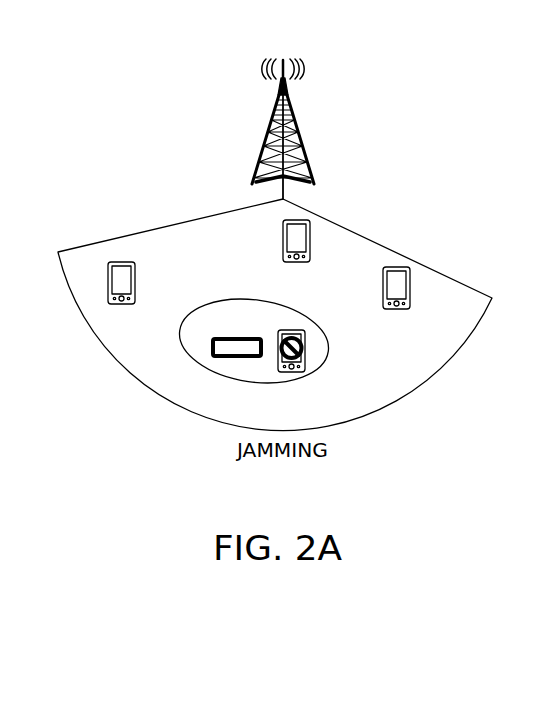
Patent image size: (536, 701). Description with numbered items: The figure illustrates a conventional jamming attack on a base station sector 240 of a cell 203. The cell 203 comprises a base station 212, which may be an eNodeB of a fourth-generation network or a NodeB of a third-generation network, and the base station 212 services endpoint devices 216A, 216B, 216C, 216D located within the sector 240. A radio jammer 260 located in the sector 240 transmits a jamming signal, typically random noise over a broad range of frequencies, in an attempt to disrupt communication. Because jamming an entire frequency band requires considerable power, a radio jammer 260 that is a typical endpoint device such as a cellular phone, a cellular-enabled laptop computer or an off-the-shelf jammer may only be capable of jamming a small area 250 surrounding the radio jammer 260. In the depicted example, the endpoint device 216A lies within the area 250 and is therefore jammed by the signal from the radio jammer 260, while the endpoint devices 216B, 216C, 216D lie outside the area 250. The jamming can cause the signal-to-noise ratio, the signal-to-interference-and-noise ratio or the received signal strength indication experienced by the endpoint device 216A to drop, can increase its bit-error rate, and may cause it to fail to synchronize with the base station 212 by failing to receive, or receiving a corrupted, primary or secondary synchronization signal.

The cell 203 is at (131, 114).
The base station 212 is at (292, 104).
The endpoint device 216A is at (293, 372).
The endpoint device 216B is at (121, 304).
The endpoint device 216C is at (296, 262).
The endpoint device 216D is at (396, 309).
The base station sector 240 is at (228, 250).
The area 250 is at (231, 330).
The radio jammer 260 is at (212, 348).